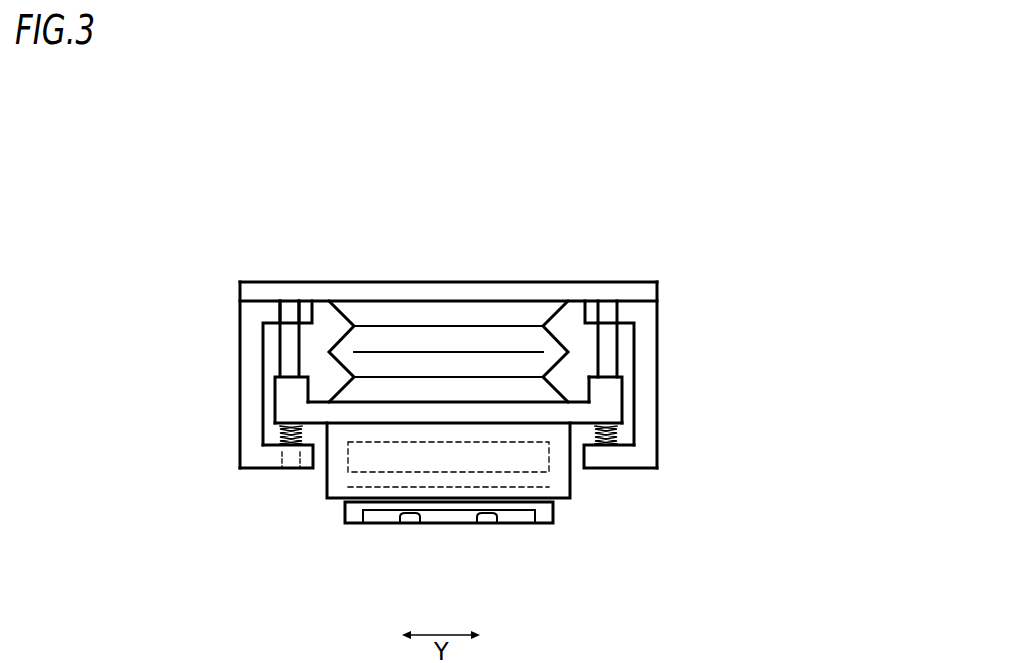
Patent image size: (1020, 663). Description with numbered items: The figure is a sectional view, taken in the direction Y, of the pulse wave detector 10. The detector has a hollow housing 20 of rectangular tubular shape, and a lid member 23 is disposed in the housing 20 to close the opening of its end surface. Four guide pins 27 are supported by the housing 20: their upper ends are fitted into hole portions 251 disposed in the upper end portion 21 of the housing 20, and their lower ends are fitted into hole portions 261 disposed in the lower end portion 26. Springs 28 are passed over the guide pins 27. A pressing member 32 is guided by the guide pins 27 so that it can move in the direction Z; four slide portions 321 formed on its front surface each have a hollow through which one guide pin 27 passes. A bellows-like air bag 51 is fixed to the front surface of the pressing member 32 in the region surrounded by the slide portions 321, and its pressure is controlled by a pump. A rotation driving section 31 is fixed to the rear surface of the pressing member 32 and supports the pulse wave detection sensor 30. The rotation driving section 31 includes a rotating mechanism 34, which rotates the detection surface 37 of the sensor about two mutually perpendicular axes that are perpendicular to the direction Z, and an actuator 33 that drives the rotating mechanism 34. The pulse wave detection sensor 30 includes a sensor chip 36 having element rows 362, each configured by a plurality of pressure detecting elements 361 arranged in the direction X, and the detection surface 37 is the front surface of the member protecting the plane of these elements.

The pulse wave detector 10 is at (474, 329).
The housing 20 is at (454, 392).
The upper end portion 21 is at (263, 310).
The lid member 23 is at (650, 291).
The lower end portion 26 is at (262, 458).
The hole portions 261 is at (290, 475).
The guide pins 27 is at (272, 368).
The hole portions 251 is at (300, 308).
The springs 28 is at (242, 423).
The rotation driving section 31 is at (630, 430).
The pressing member 32 is at (479, 403).
The slide portions 321 is at (623, 380).
The actuator 33 is at (573, 470).
The rotating mechanism 34 is at (452, 452).
The air bag 51 is at (512, 338).
The pulse wave detection sensor 30 is at (447, 561).
The sensor chip 36 is at (370, 527).
The detection surface 37 is at (353, 528).
The pressure detecting elements 361 is at (402, 527).
The element rows 362 is at (443, 577).